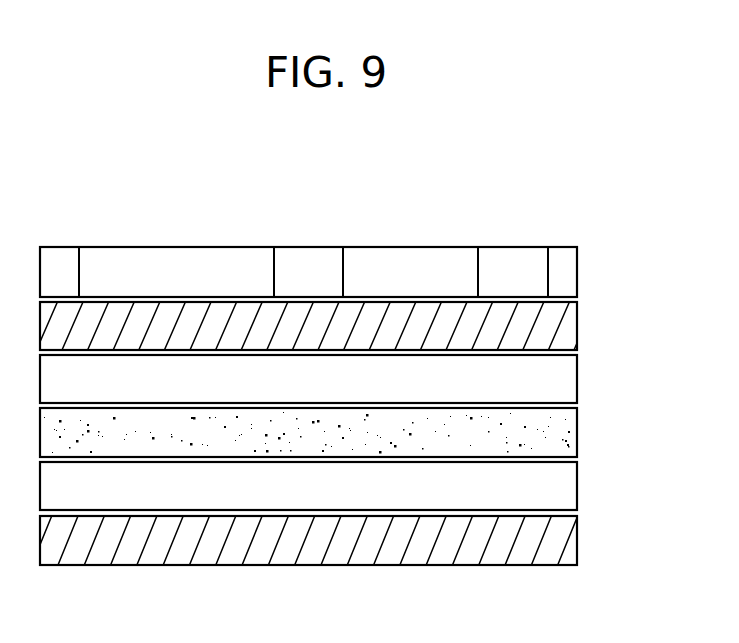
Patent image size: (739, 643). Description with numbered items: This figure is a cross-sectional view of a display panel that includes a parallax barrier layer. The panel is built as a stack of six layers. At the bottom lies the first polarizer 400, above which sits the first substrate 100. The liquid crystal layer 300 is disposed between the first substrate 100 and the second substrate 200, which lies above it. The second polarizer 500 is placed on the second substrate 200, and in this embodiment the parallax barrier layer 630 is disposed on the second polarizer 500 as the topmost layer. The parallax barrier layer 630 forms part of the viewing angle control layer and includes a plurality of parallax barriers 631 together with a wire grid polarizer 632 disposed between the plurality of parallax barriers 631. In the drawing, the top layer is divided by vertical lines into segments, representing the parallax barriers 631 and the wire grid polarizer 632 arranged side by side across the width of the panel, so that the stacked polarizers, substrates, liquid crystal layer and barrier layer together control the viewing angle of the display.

The first substrate 100 is at (578, 484).
The second substrate 200 is at (578, 376).
The liquid crystal layer 300 is at (578, 430).
The first polarizer 400 is at (578, 541).
The second polarizer 500 is at (578, 326).
The parallax barrier layer 630 is at (578, 277).
The parallax barriers 631 is at (175, 263).
The wire grid polarizer 632 is at (308, 262).